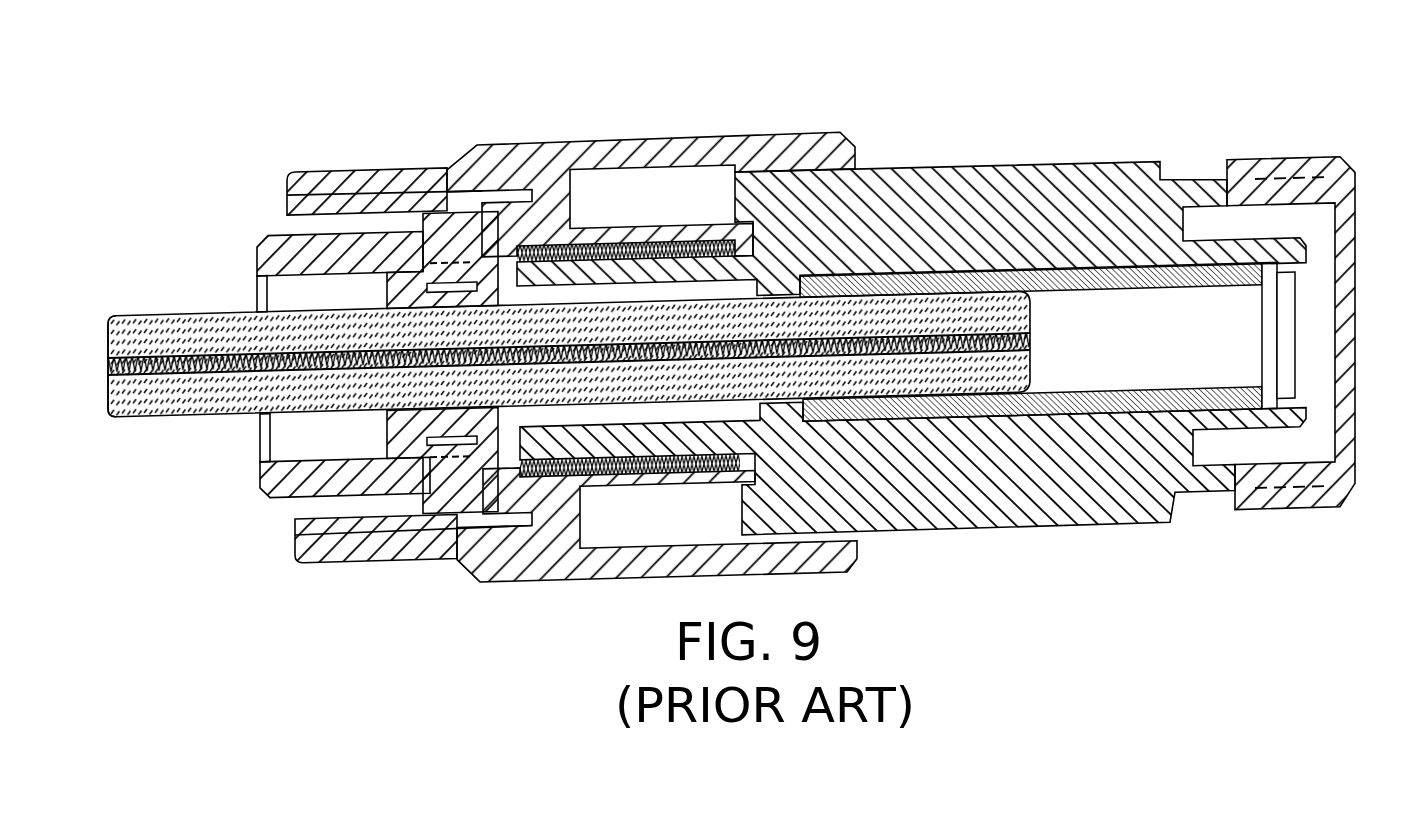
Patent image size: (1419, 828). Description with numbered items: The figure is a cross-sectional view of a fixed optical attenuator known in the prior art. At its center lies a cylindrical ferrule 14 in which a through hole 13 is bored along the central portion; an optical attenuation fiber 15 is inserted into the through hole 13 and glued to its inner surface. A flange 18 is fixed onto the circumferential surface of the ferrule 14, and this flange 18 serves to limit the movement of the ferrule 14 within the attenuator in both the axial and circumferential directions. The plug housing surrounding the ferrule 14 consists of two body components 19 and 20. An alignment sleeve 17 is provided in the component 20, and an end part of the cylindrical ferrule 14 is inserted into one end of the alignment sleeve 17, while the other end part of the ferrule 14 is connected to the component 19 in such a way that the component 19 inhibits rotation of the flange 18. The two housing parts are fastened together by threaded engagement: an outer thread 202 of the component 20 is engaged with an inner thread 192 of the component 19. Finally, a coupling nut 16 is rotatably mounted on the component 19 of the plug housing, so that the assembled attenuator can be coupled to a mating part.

The through hole 13 is at (176, 372).
The cylindrical ferrule 14 is at (203, 316).
The optical attenuation fiber 15 is at (106, 363).
The coupling nut 16 is at (794, 150).
The alignment sleeve 17 is at (1110, 275).
The flange 18 is at (488, 285).
The body component 19 is at (400, 257).
The body component 20 is at (990, 198).
The inner thread 192 is at (612, 245).
The outer thread 202 is at (716, 243).